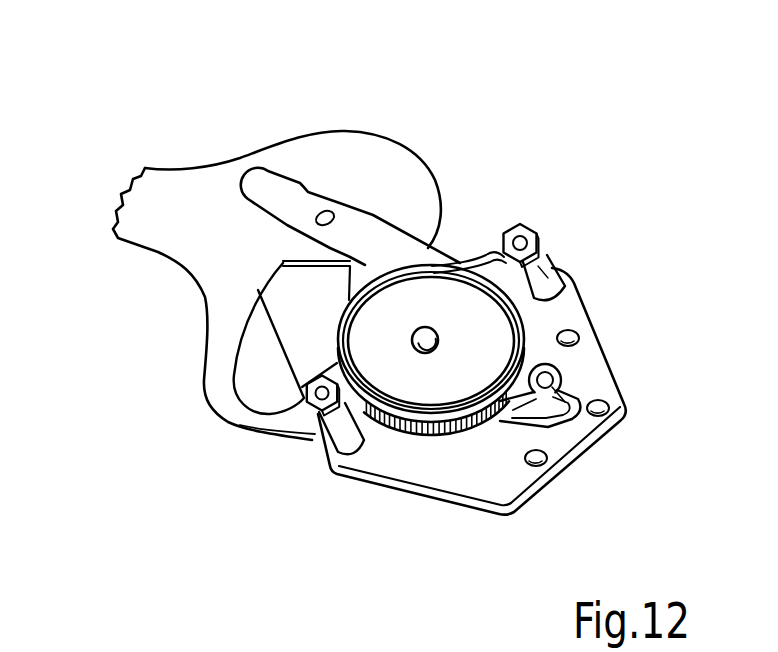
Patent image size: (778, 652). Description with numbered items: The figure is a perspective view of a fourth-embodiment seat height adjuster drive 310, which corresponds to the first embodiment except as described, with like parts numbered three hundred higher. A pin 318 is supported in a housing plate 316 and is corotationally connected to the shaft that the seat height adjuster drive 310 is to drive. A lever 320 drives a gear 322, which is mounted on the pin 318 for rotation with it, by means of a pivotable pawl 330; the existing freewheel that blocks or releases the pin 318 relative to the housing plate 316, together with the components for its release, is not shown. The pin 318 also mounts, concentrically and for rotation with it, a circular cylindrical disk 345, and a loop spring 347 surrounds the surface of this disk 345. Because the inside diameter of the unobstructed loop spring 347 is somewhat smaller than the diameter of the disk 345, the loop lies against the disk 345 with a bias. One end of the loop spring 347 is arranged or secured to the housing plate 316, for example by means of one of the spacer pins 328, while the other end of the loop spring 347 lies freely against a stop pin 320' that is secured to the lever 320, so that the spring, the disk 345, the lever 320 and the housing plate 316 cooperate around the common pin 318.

The seat height adjuster drive 310 is at (164, 118).
The housing plate 316 is at (565, 307).
The pin 318 is at (423, 345).
The lever 320 is at (236, 285).
The stop pin 320' is at (621, 381).
The gear 322 is at (437, 447).
The spacer pins 328 is at (540, 272).
The pivotable pawl 330 is at (365, 243).
The circular cylindrical disk 345 is at (453, 377).
The loop spring 347 is at (510, 410).